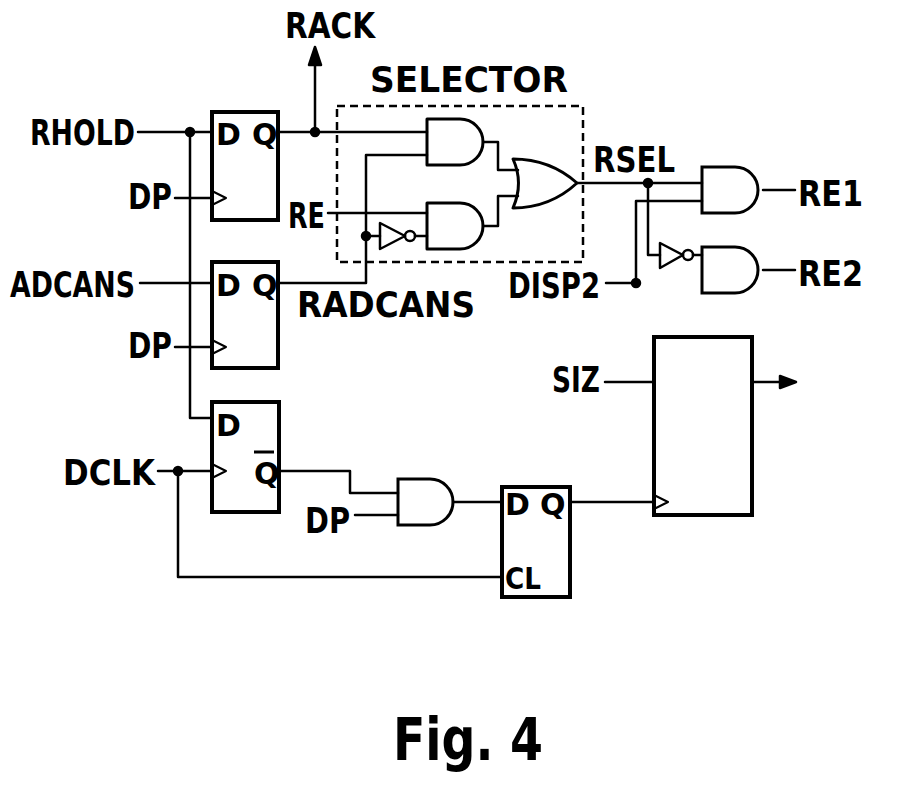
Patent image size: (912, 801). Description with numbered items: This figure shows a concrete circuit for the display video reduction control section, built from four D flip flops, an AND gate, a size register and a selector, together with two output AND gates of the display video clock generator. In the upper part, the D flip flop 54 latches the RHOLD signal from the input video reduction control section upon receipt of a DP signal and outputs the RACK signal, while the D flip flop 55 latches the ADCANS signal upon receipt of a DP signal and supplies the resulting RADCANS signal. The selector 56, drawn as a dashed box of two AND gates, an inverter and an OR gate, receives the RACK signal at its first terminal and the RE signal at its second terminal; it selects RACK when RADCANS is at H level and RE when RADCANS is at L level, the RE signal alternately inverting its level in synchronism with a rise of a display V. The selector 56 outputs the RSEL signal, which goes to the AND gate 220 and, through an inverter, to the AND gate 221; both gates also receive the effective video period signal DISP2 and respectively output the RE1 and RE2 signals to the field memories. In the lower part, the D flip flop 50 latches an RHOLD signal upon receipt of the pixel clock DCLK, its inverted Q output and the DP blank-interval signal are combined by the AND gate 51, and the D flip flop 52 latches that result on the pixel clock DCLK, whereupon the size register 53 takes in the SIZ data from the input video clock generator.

The D flip flop 54 is at (247, 123).
The D flip flop 55 is at (280, 343).
The D flip flop 50 is at (281, 432).
The AND gate 51 is at (432, 488).
The D flip flop 52 is at (540, 487).
The size register 53 is at (745, 515).
The selector 56 is at (583, 108).
The AND gate 220 is at (733, 180).
The AND gate 221 is at (745, 290).